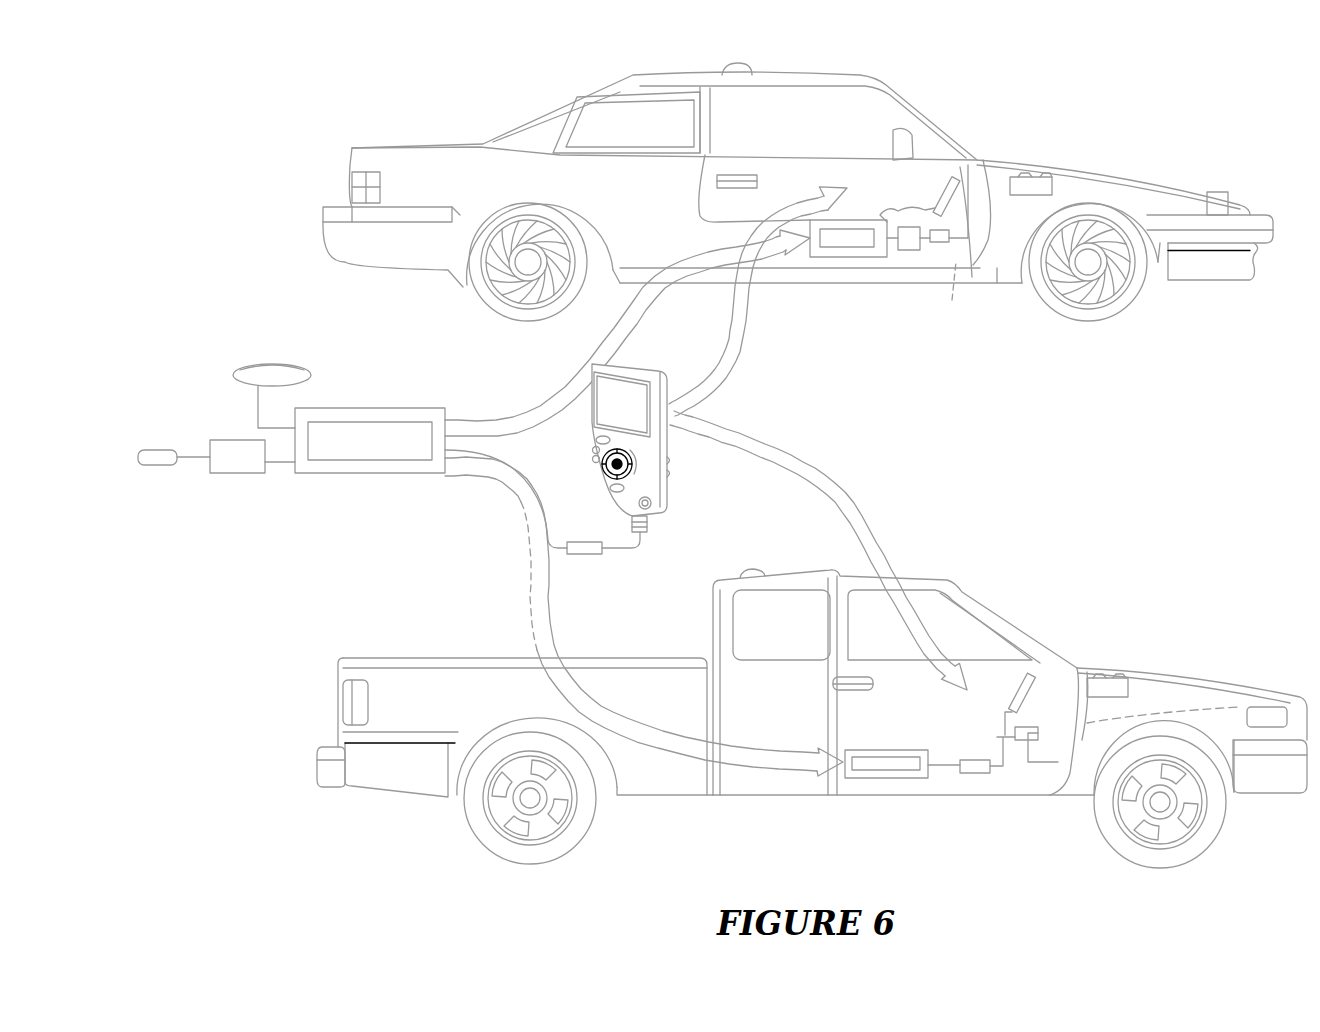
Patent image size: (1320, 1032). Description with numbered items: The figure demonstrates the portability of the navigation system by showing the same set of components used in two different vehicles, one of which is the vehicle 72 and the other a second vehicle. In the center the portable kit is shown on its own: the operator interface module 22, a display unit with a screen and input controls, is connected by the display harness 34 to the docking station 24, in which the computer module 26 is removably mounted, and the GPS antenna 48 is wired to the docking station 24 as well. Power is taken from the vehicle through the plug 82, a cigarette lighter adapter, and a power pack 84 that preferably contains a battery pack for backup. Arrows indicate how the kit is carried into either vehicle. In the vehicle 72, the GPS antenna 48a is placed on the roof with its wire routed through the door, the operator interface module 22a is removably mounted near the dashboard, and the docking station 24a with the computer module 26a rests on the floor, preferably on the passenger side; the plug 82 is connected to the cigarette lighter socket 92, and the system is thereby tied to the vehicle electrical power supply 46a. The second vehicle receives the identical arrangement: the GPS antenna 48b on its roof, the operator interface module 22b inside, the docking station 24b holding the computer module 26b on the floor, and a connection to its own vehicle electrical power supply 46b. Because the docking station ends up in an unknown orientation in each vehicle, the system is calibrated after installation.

The vehicle 72 is at (795, 68).
The GPS antenna 48a is at (727, 68).
The operator interface module 22a is at (963, 160).
The vehicle electrical power supply 46a is at (1055, 187).
The docking station 24a is at (827, 246).
The computer module 26a is at (882, 255).
The power pack 84 is at (915, 250).
The plug 82 is at (943, 243).
The cigarette lighter socket 92 is at (952, 298).
The docking station 24 is at (415, 408).
The computer module 26 is at (372, 452).
The GPS antenna 48 is at (266, 364).
The operator interface module 22 is at (592, 407).
The display harness 34 is at (644, 540).
The GPS antenna 48b is at (745, 575).
The operator interface module 22b is at (1043, 668).
The vehicle electrical power supply 46b is at (1128, 687).
The docking station 24b is at (858, 773).
The computer module 26b is at (922, 777).